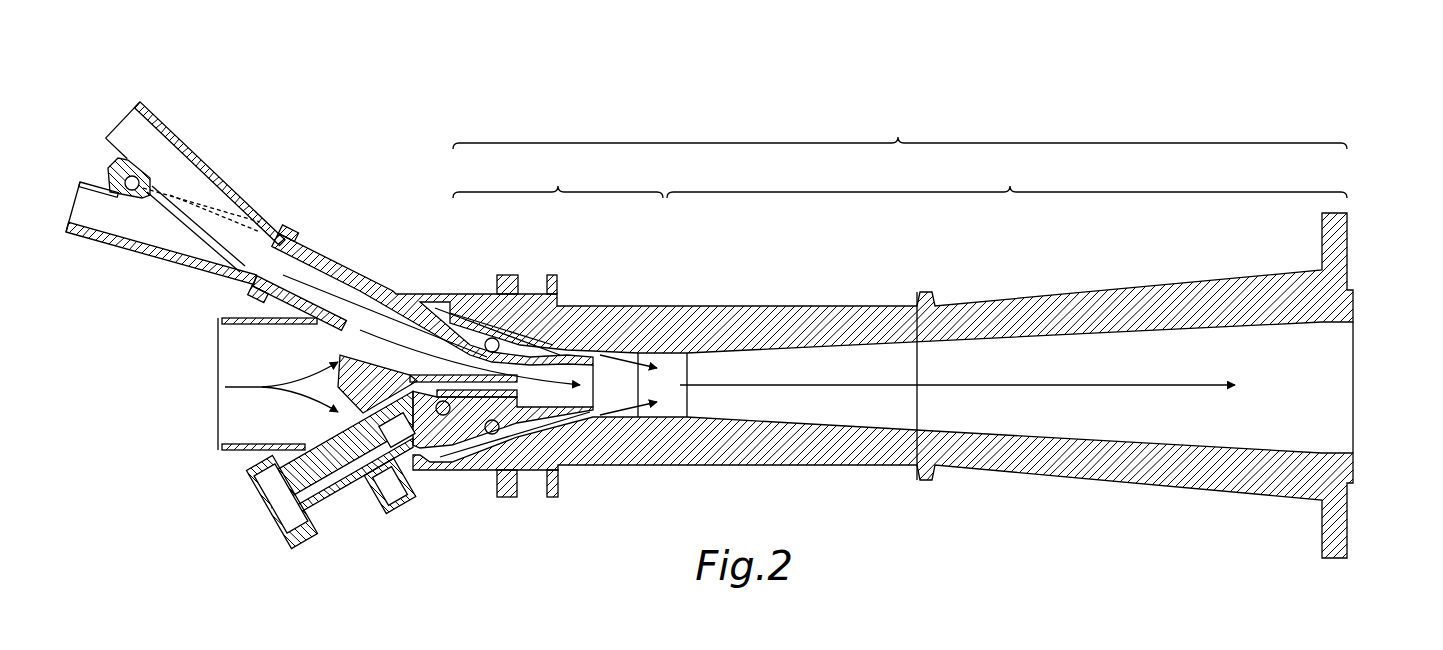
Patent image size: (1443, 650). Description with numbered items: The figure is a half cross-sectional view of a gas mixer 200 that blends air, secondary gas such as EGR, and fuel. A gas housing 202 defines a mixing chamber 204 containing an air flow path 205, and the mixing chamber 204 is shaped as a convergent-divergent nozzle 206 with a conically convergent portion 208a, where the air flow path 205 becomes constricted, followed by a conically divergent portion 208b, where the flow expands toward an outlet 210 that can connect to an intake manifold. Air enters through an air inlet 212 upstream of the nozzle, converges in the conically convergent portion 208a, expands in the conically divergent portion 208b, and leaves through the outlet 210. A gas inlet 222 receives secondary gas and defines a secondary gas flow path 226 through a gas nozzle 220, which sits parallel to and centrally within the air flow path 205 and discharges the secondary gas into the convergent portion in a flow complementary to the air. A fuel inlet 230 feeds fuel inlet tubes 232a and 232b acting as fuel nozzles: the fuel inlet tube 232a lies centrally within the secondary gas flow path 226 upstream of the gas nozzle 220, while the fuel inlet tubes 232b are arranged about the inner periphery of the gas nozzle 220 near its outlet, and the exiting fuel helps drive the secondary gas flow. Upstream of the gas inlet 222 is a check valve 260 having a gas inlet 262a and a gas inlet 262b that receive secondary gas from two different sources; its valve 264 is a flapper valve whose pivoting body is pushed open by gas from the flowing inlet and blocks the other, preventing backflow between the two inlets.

The gas mixer 200 is at (742, 301).
The gas housing 202 is at (790, 467).
The mixing chamber 204 is at (667, 358).
The air flow path 205 is at (1127, 392).
The convergent-divergent nozzle 206 is at (900, 133).
The conically convergent portion 208a is at (558, 183).
The conically divergent portion 208b is at (1007, 183).
The outlet 210 is at (1335, 421).
The air inlet 212 is at (210, 353).
The gas nozzle 220 is at (585, 367).
The gas inlet 222 is at (277, 240).
The secondary gas flow path 226 is at (367, 313).
The fuel inlet 230 is at (263, 517).
The fuel inlet tube 232a is at (477, 387).
The fuel inlet tubes 232b is at (523, 340).
The check valve 260 is at (170, 189).
The gas inlet 262a is at (170, 217).
The gas inlet 262b is at (95, 242).
The valve 264 is at (200, 203).